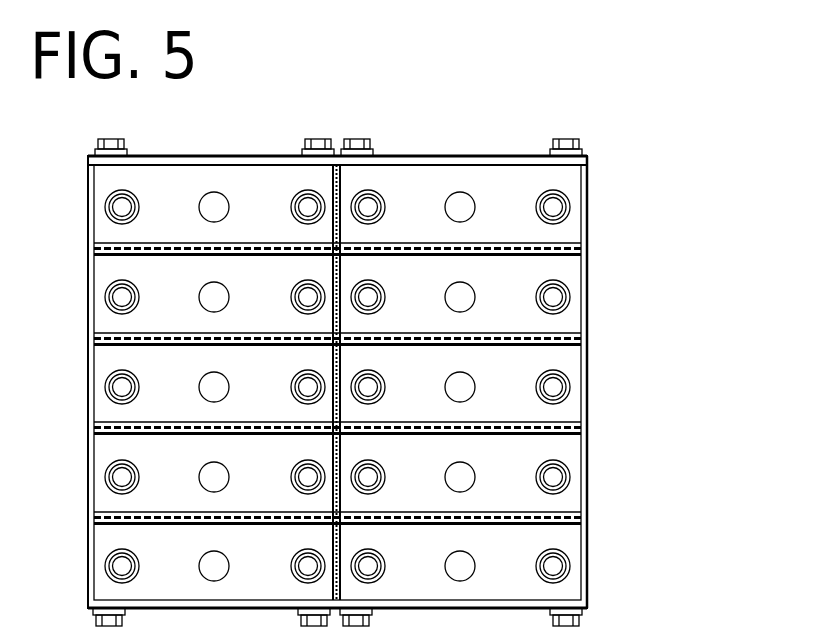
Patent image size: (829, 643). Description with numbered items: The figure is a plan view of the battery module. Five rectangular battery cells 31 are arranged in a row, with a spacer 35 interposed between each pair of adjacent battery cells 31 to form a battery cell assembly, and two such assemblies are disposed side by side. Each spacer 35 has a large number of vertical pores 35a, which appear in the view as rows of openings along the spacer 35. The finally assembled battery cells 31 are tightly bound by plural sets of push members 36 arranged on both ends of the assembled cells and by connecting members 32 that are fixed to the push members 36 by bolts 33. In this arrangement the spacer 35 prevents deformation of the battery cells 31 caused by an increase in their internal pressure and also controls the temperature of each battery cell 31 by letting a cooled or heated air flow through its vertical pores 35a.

The battery cell 31 is at (572, 185).
The connecting member 32 is at (587, 490).
The bolt 33 is at (578, 147).
The spacer 35 is at (577, 333).
The vertical pore 35a is at (577, 248).
The push member 36 is at (412, 157).